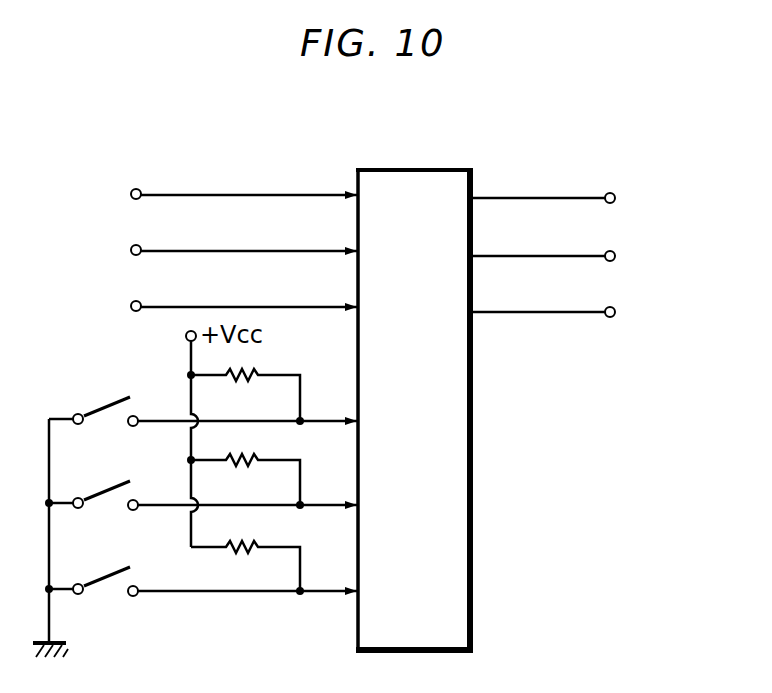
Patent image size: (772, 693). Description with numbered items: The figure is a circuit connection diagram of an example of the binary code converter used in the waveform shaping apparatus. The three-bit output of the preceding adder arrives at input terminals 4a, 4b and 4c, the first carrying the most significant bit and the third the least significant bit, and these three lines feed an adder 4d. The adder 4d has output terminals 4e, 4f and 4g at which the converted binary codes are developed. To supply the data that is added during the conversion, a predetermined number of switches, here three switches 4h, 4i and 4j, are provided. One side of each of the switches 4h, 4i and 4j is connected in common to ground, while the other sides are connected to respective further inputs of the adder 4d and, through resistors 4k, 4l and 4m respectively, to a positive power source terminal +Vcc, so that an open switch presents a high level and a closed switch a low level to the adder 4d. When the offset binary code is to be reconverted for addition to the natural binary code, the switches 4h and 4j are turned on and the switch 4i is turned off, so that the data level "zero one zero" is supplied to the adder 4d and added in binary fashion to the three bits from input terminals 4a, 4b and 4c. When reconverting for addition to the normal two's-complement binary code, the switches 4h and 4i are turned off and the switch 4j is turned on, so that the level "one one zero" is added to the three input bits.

The input terminal 4a is at (137, 188).
The input terminal 4b is at (137, 249).
The input terminal 4c is at (137, 305).
The adder 4d is at (478, 179).
The output terminal 4e is at (616, 198).
The output terminal 4f is at (616, 256).
The output terminal 4g is at (616, 312).
The switch 4h is at (102, 401).
The switch 4i is at (101, 487).
The switch 4j is at (98, 575).
The resistor 4k is at (248, 372).
The resistor 4l is at (248, 461).
The resistor 4m is at (250, 547).